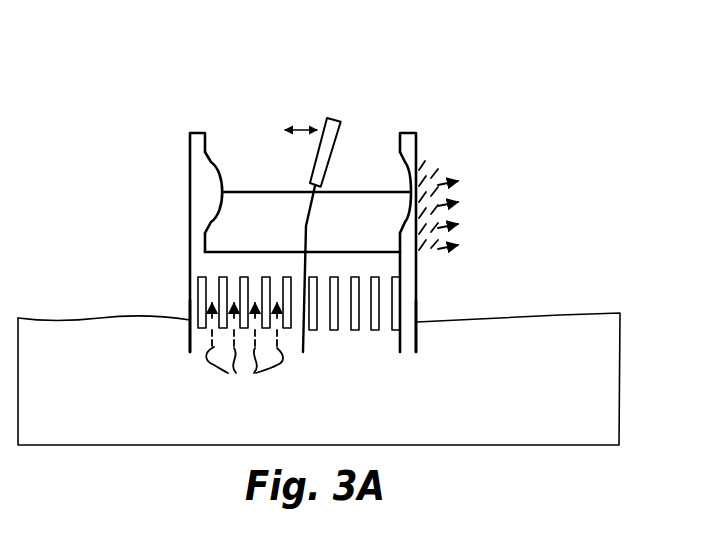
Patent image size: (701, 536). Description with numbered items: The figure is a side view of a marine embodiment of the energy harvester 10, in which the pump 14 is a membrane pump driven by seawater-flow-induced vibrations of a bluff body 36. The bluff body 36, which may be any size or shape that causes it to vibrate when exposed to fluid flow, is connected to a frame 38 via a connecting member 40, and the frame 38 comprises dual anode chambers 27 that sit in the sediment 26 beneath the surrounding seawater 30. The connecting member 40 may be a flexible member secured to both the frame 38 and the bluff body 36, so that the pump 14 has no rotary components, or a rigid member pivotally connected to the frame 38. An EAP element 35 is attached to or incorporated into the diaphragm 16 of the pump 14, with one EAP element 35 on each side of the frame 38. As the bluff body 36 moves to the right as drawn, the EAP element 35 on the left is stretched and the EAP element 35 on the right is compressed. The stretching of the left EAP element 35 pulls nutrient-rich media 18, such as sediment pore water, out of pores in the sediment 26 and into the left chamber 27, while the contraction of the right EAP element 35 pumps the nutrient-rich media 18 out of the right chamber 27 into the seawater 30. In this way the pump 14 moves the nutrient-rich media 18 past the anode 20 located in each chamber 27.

The energy harvester 10 is at (128, 57).
The pump 14 is at (156, 130).
The diaphragm 16 is at (213, 167).
The EAP element 35 is at (409, 171).
The bluff body 36 is at (337, 116).
The connecting member 40 is at (308, 213).
The nutrient-rich media 18 is at (437, 178).
The anode 20 is at (287, 276).
The anode chambers 27 is at (191, 268).
The frame 38 is at (417, 258).
The seawater 30 is at (562, 207).
The sediment 26 is at (539, 397).